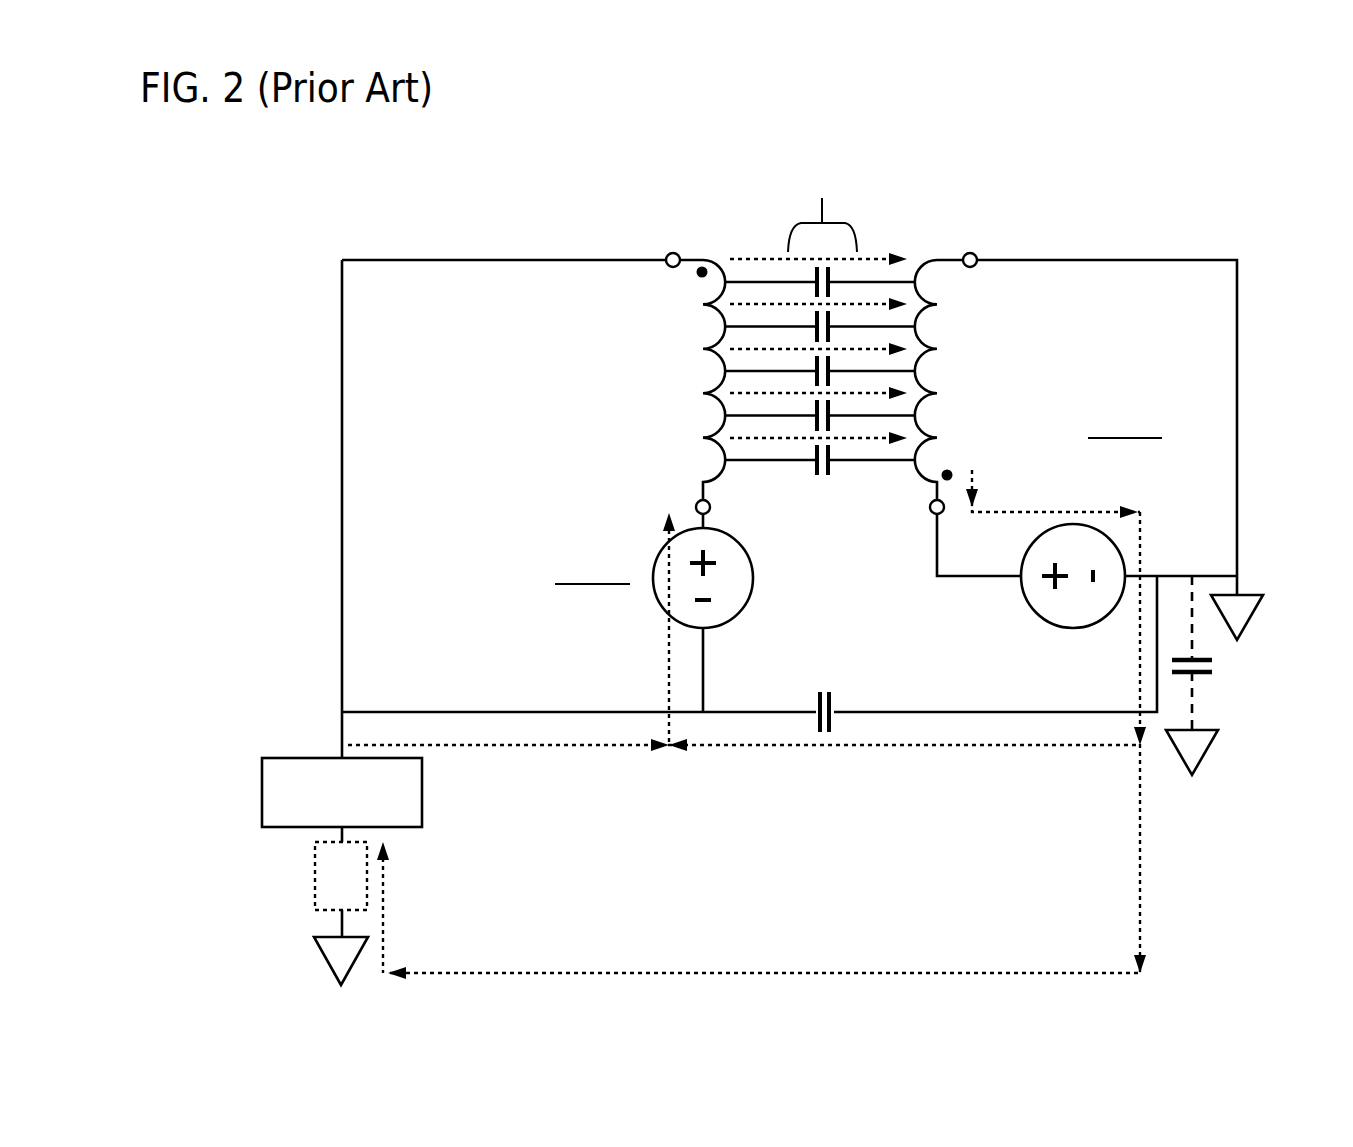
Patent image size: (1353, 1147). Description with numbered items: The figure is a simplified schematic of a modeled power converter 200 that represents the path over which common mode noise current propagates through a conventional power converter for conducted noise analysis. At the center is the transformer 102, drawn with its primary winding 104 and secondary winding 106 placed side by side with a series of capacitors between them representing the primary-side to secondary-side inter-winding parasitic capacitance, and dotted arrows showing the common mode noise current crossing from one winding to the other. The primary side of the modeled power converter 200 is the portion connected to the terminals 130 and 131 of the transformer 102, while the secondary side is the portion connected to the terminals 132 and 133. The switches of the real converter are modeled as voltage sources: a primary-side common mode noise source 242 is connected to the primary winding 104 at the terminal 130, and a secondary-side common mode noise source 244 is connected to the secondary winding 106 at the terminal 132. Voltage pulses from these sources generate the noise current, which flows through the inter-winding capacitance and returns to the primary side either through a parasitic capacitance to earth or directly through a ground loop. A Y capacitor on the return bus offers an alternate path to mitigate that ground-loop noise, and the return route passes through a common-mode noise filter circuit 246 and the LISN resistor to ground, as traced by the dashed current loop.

The modeled power converter 200 is at (256, 200).
The transformer 102 is at (767, 297).
The primary winding 104 is at (743, 180).
The secondary winding 106 is at (988, 180).
The terminal 130 is at (697, 503).
The terminal 131 is at (667, 267).
The terminal 132 is at (930, 513).
The terminal 133 is at (975, 267).
The primary-side common mode noise source 242 is at (744, 540).
The secondary-side common mode noise source 244 is at (1036, 611).
The common-mode noise filter circuit 246 is at (423, 810).